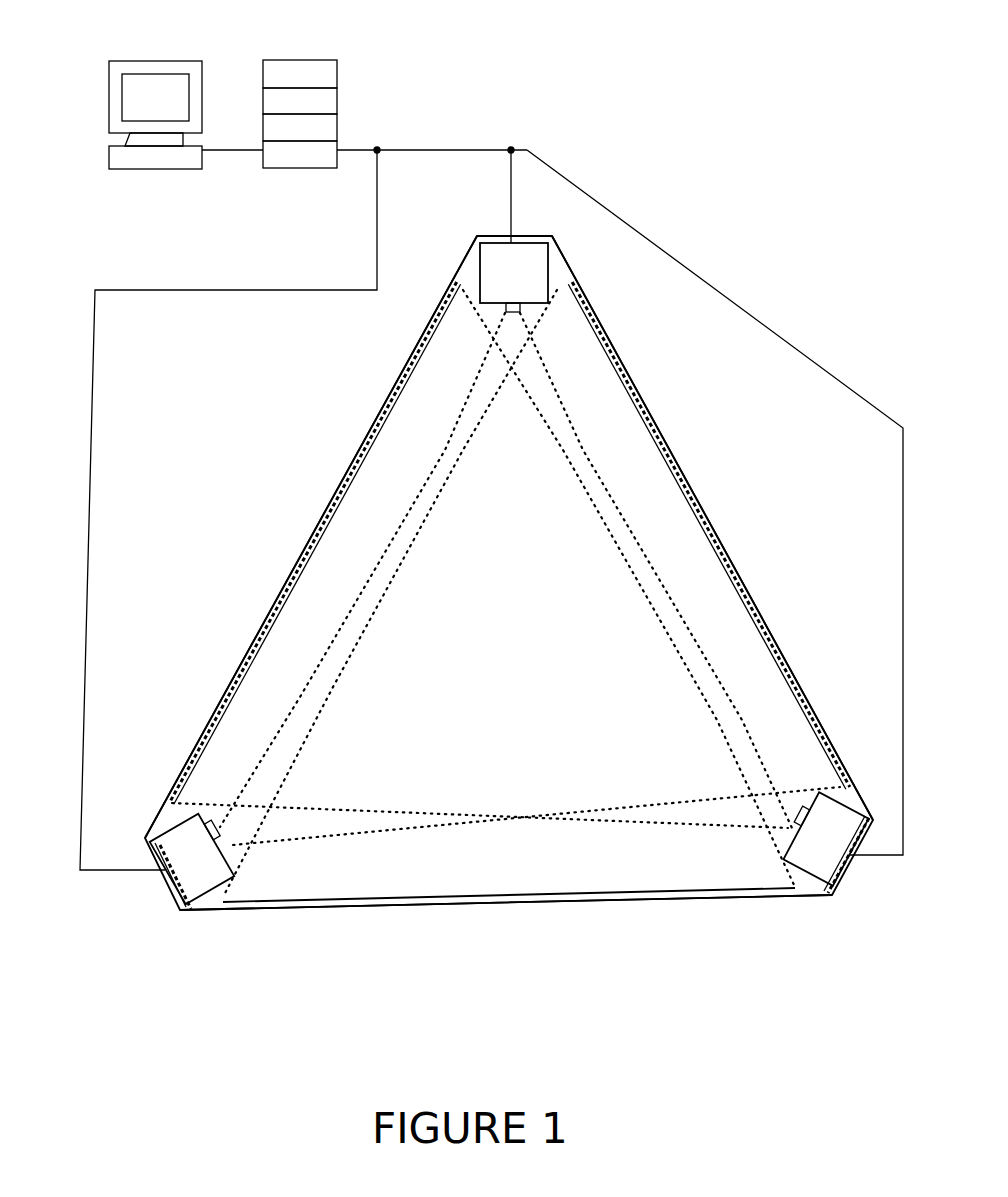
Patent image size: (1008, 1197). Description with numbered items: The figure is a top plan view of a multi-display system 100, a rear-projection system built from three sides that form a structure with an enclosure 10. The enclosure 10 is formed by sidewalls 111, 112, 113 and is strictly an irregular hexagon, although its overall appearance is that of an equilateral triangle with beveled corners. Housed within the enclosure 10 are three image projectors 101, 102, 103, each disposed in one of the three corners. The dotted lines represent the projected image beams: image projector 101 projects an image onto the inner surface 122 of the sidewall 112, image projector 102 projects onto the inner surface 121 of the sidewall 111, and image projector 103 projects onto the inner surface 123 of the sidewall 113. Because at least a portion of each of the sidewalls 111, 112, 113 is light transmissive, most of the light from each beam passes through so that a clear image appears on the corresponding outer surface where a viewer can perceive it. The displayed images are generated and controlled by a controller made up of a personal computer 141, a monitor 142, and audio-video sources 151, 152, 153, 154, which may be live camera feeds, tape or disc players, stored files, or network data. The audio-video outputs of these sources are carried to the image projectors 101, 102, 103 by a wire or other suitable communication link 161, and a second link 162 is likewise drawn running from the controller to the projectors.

The enclosure 10 is at (512, 622).
The multi-display system 100 is at (861, 168).
The image projector 101 is at (540, 296).
The image projector 102 is at (195, 857).
The image projector 103 is at (840, 851).
The sidewall 111 is at (630, 367).
The sidewall 112 is at (608, 905).
The sidewall 113 is at (214, 702).
The inner surface 121 is at (693, 519).
The inner surface 122 is at (513, 891).
The inner surface 123 is at (342, 510).
The personal computer 141 is at (108, 150).
The monitor 142 is at (108, 79).
The audio-video source 151 is at (300, 59).
The audio-video source 152 is at (338, 96).
The audio-video source 153 is at (338, 122).
The audio-video source 154 is at (300, 169).
The link 161 is at (97, 427).
The second connection line 162 is at (642, 223).